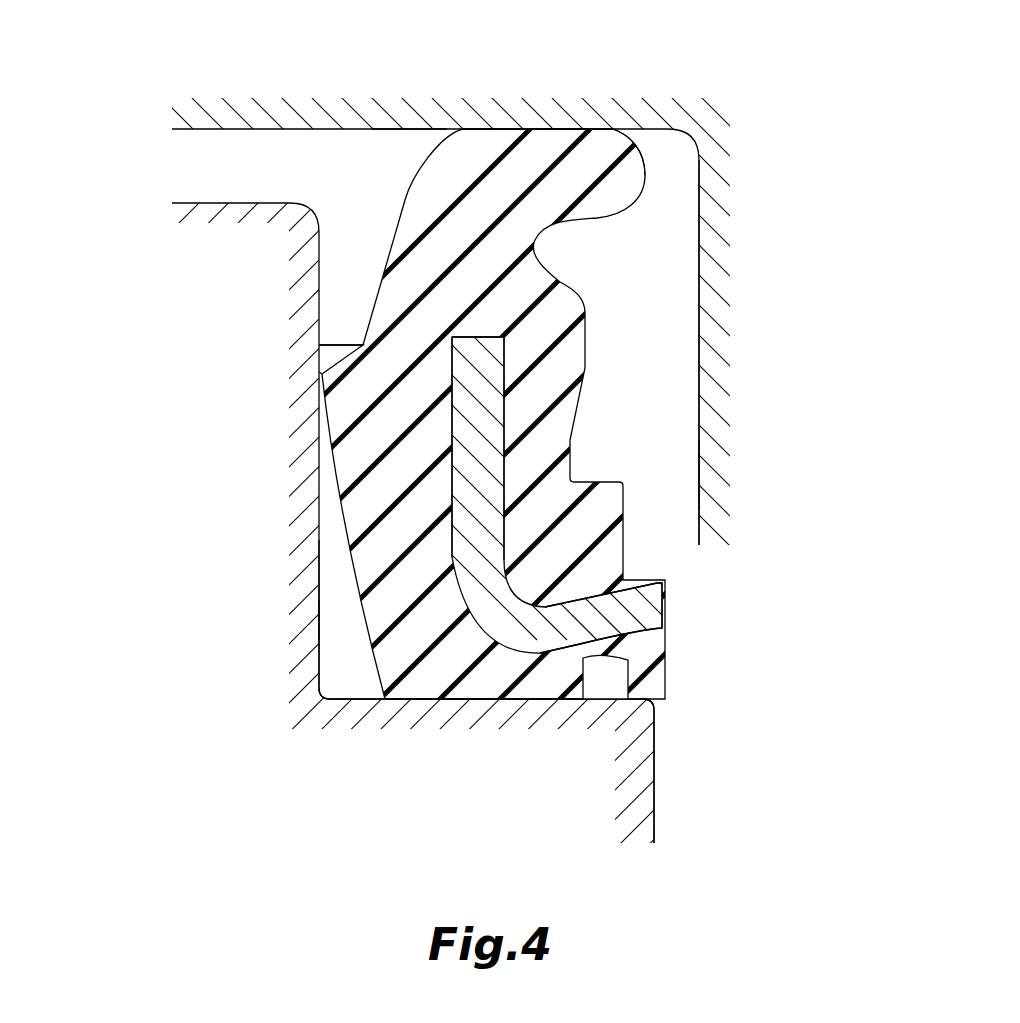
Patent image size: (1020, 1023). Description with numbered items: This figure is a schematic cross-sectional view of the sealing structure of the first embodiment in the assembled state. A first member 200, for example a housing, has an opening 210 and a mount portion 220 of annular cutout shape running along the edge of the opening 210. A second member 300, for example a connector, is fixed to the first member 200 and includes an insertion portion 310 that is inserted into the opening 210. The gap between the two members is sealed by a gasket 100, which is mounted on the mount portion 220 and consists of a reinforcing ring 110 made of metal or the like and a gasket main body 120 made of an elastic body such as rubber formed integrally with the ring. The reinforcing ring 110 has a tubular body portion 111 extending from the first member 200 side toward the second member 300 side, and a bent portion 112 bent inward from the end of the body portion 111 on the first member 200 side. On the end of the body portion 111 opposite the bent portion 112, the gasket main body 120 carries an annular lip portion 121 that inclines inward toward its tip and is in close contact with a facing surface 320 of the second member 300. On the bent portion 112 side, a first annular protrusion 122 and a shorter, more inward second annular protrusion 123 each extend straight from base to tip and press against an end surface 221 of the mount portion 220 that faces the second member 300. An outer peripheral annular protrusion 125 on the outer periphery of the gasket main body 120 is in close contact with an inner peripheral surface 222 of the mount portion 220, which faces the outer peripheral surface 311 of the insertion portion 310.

The gasket 100 is at (510, 417).
The reinforcing ring 110 is at (530, 462).
The body portion 111 is at (480, 428).
The bent portion 112 is at (633, 615).
The gasket main body 120 is at (362, 233).
The lip portion 121 is at (580, 172).
The first annular protrusion 122 is at (493, 697).
The second annular protrusion 123 is at (540, 693).
The outer peripheral annular protrusion 125 is at (330, 358).
The first member 200 is at (510, 523).
The opening 210 is at (656, 795).
The mount portion 220 is at (347, 648).
The end surface 221 is at (598, 693).
The inner peripheral surface 222 is at (323, 597).
The second member 300 is at (574, 279).
The insertion portion 310 is at (753, 352).
The outer peripheral surface 311 is at (700, 471).
The facing surface 320 is at (447, 130).